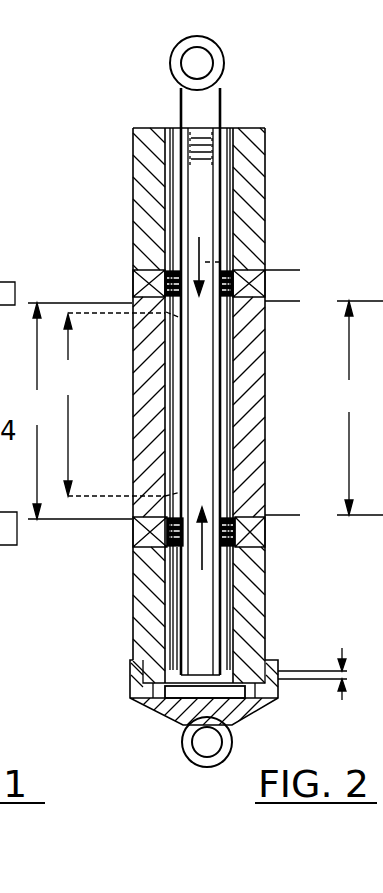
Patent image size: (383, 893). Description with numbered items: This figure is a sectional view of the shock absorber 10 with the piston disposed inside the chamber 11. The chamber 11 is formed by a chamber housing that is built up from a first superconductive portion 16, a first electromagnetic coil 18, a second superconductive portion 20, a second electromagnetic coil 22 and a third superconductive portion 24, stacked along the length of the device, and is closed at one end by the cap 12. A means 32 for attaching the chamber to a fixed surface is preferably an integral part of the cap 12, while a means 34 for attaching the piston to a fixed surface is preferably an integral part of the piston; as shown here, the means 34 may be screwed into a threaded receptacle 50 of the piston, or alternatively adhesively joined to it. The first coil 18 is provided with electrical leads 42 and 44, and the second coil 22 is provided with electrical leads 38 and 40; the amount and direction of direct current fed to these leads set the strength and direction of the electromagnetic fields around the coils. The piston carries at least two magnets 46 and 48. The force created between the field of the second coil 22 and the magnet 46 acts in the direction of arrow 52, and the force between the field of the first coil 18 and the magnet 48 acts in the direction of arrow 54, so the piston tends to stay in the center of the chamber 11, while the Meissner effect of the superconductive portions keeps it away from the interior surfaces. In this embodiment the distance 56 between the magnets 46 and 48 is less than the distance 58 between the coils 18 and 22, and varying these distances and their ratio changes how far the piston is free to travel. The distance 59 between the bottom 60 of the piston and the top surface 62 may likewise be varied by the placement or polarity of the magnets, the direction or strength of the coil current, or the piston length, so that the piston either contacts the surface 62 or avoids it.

The shock absorber 10 is at (250, 128).
The chamber 11 is at (221, 127).
The cap 12 is at (160, 722).
The first superconductive portion 16 is at (145, 591).
The first electromagnetic coil 18 is at (143, 531).
The second superconductive portion 20 is at (140, 452).
The second electromagnetic coil 22 is at (140, 284).
The third superconductive portion 24 is at (137, 183).
The means for attaching the chamber to a fixed surface 32 is at (190, 760).
The means for attaching the piston to a fixed surface 34 is at (175, 52).
The electrical lead 38 is at (294, 271).
The electrical lead 40 is at (283, 302).
The electrical lead 42 is at (295, 514).
The electrical lead 44 is at (282, 541).
The magnet 46 is at (165, 318).
The magnet 48 is at (205, 497).
The threaded receptacle 50 is at (192, 128).
The arrow 52 is at (232, 263).
The arrow 54 is at (204, 563).
The distance between magnets 56 is at (70, 405).
The distance between coils 58 is at (202, 410).
The distance between piston bottom and top surface 59 is at (342, 700).
The bottom of piston 60 is at (200, 667).
The top surface 62 is at (153, 705).